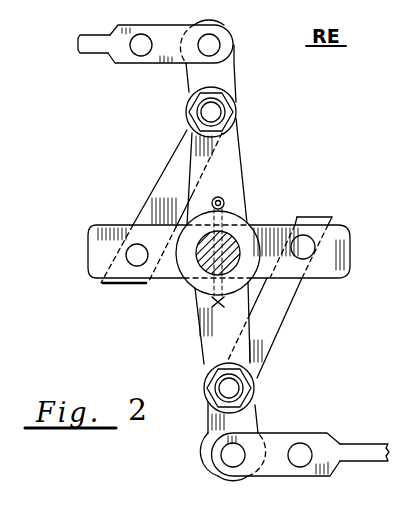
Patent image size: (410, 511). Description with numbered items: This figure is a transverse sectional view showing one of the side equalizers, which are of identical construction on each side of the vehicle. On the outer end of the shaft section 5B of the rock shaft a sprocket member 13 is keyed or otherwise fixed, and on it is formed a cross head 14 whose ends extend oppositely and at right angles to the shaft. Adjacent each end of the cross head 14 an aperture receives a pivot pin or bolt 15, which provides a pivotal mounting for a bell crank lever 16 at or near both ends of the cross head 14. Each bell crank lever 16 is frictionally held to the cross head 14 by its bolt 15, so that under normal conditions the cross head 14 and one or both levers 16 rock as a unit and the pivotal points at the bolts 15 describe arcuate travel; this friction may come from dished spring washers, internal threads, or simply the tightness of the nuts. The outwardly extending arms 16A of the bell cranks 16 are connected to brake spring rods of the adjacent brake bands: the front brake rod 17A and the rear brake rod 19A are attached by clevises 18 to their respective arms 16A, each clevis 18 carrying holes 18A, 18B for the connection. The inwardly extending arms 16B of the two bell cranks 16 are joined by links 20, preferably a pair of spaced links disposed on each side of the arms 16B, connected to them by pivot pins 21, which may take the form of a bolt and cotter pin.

The shaft section 5B is at (210, 260).
The sprocket member 13 is at (236, 216).
The cross head 14 is at (232, 170).
The pivot pin or bolt 15 is at (213, 114).
The bell crank lever 16 is at (184, 132).
The outwardly extending arm 16A is at (222, 72).
The inwardly extending arm 16B is at (155, 188).
The front brake rod 17A is at (92, 52).
The clevis 18 is at (150, 63).
The hole in lower bar 18A is at (236, 460).
The hole in upper bar 18B is at (217, 43).
The rear brake rod 19A is at (367, 444).
The link 20 is at (284, 225).
The pivot pin 21 is at (304, 246).